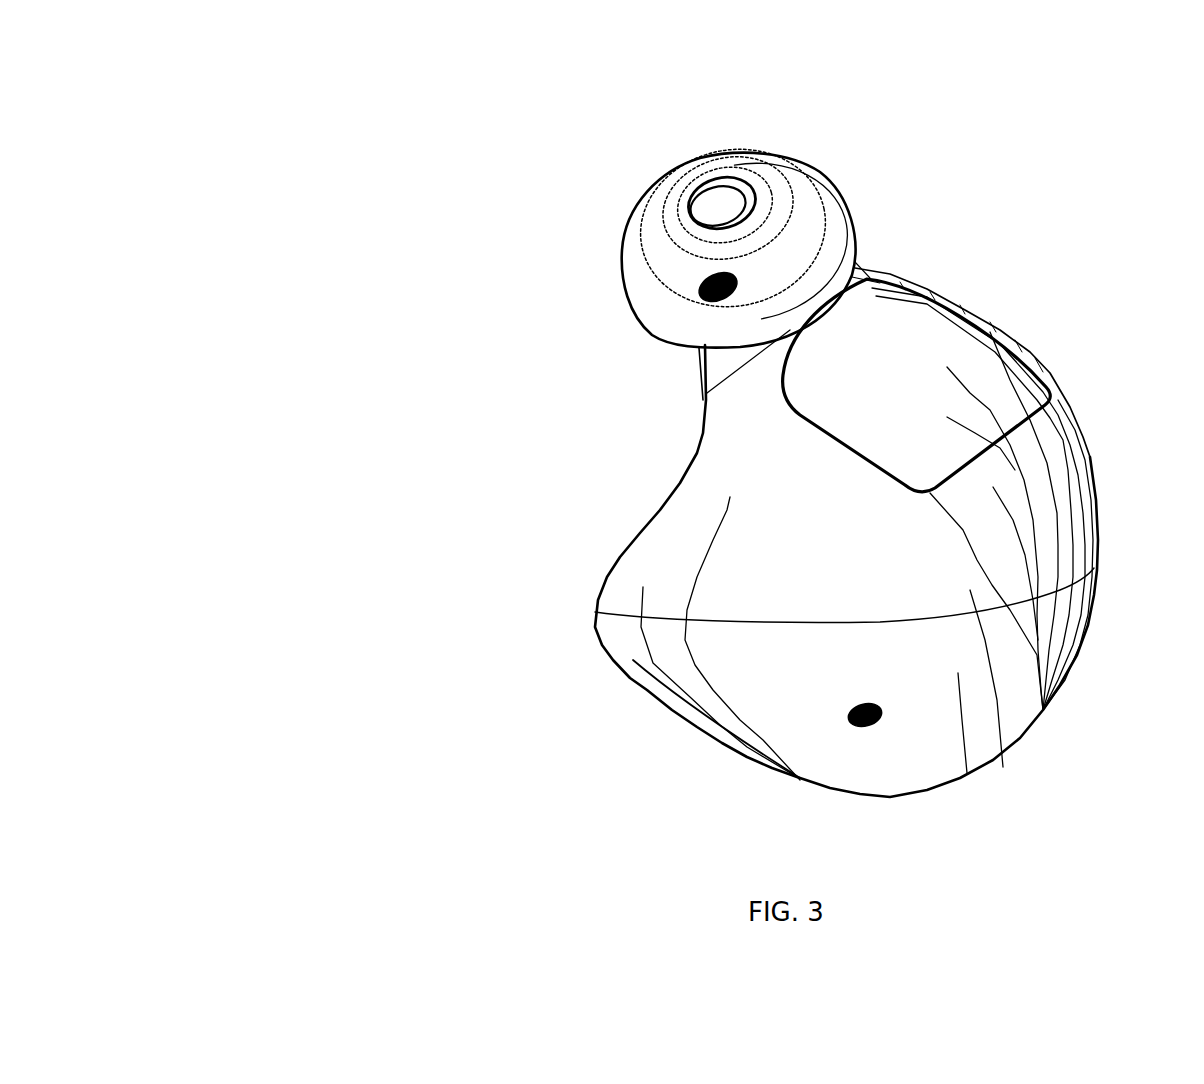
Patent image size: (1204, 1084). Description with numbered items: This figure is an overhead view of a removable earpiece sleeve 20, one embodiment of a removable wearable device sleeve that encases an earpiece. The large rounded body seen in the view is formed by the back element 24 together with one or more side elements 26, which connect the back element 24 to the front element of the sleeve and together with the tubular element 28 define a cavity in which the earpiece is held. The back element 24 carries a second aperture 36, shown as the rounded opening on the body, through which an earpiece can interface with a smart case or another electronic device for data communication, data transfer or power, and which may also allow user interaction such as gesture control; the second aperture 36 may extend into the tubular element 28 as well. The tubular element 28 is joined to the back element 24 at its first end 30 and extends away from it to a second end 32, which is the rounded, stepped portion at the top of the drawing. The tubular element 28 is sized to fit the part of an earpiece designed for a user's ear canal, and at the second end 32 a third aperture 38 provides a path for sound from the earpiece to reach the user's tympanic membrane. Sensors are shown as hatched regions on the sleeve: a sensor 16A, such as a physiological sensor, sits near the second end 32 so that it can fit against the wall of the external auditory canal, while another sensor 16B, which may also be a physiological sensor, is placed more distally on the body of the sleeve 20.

The removable earpiece sleeve 20 is at (385, 210).
The sensor 16A is at (710, 278).
The sensor 16B is at (885, 717).
The back element 24 is at (648, 564).
The side element 26 is at (713, 687).
The tubular element 28 is at (707, 357).
The first end 30 is at (723, 375).
The second end 32 is at (640, 290).
The second aperture 36 is at (928, 352).
The third aperture 38 is at (718, 213).